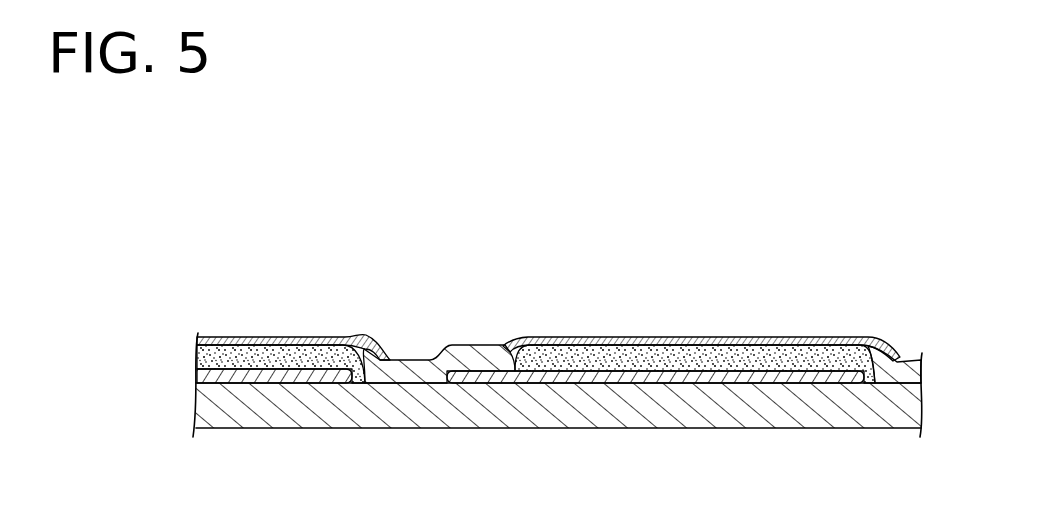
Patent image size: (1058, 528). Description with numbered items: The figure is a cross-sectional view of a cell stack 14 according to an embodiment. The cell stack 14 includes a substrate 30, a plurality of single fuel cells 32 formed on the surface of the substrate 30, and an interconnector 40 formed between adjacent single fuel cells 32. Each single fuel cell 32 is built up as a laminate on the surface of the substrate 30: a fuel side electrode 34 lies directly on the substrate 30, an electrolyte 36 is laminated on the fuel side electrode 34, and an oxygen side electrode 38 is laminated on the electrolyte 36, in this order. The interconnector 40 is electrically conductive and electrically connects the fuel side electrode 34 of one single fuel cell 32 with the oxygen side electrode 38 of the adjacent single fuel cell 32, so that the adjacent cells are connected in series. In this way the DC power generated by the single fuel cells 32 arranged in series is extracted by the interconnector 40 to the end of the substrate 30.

The cell stack 14 is at (617, 128).
The substrate 30 is at (390, 413).
The single fuel cell 32 is at (675, 222).
The fuel side electrode 34 is at (483, 372).
The electrolyte 36 is at (556, 352).
The oxygen side electrode 38 is at (672, 338).
The interconnector 40 is at (415, 355).